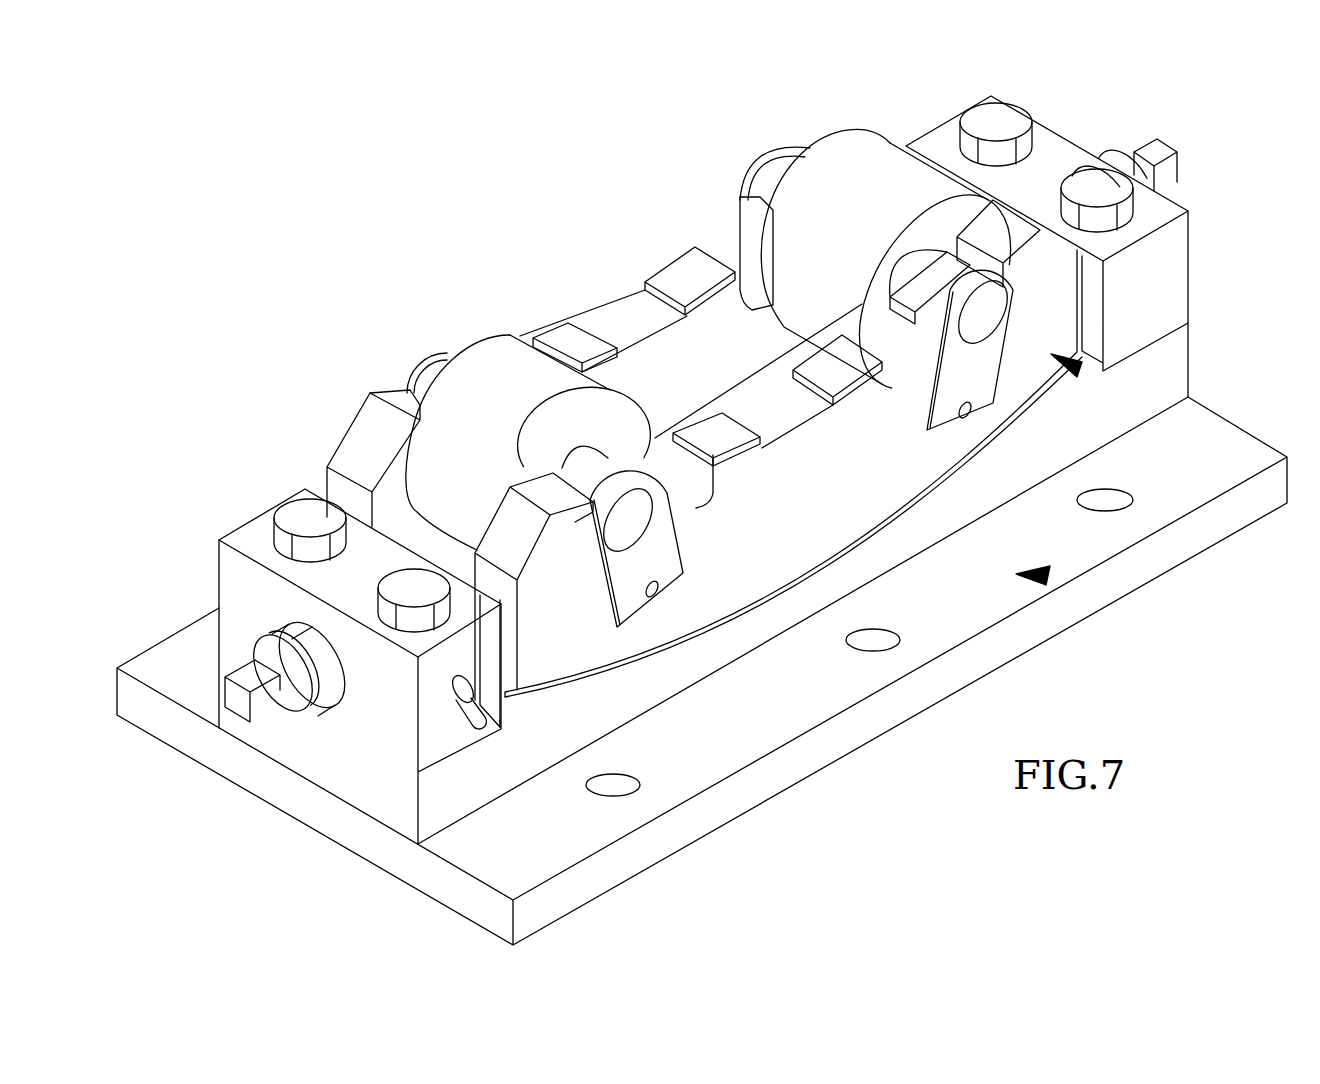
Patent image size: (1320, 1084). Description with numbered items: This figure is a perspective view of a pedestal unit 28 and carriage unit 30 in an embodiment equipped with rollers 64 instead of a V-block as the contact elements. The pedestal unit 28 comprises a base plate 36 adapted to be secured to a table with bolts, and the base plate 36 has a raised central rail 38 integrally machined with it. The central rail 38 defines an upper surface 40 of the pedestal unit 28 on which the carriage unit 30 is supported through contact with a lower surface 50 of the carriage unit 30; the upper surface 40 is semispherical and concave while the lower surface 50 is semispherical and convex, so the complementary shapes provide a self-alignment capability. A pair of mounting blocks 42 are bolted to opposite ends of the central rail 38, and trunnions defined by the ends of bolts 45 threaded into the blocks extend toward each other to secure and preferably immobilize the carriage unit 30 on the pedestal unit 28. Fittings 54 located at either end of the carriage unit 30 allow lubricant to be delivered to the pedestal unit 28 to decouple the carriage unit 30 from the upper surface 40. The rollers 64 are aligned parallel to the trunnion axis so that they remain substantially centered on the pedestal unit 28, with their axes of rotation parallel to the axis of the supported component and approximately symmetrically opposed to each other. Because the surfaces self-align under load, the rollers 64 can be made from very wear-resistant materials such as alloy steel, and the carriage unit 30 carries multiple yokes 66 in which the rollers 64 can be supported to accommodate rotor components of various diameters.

The pedestal unit 28 is at (1047, 578).
The carriage unit 30 is at (1078, 370).
The base plate 36 is at (747, 720).
The central rail 38 is at (324, 762).
The upper surface 40 is at (597, 670).
The mounting blocks 42 is at (230, 563).
The bolts 45 is at (234, 692).
The lower surface 50 is at (617, 672).
The fittings 54 is at (476, 719).
The rollers 64 is at (493, 363).
The yokes 66 is at (690, 477).